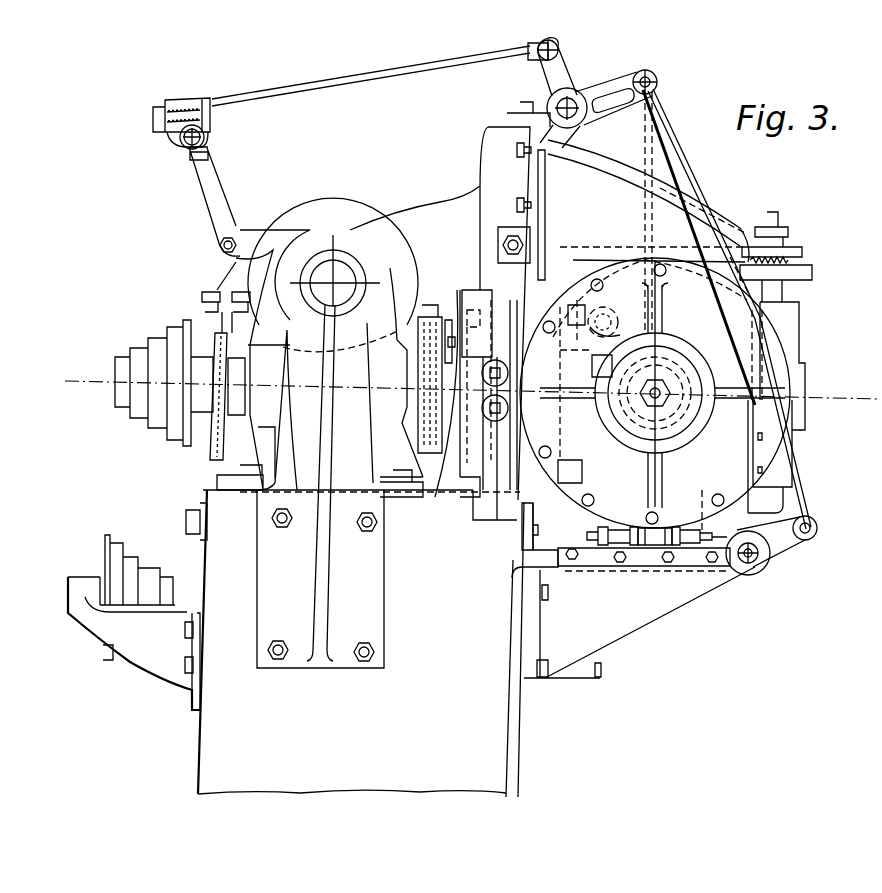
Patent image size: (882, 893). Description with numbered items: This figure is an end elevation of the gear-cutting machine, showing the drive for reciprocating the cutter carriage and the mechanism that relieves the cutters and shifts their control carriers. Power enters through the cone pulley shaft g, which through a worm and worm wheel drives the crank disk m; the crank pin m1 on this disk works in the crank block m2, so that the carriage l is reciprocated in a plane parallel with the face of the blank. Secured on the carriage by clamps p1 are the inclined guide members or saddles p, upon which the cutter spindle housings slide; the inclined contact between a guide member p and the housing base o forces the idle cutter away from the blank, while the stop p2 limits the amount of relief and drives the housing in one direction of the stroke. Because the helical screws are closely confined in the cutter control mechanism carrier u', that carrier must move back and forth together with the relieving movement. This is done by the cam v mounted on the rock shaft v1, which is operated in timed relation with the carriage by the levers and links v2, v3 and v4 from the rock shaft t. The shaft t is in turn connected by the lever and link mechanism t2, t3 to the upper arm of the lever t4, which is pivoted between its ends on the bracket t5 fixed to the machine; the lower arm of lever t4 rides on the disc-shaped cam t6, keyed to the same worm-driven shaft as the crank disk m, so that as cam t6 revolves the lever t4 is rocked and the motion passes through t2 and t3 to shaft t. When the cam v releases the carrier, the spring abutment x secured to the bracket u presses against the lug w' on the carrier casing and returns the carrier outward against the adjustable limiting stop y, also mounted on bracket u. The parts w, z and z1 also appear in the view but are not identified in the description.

The rock shaft t is at (580, 90).
The lever and link mechanism t2 is at (548, 68).
The lever and link mechanism t3 is at (362, 83).
The lever t4 is at (207, 203).
The bracket t5 is at (272, 247).
The cam t6 is at (205, 357).
The pulley shaft g is at (343, 277).
The crank disk m is at (415, 450).
The crank pin m1 is at (440, 490).
The crank block m2 is at (463, 293).
The carriage l is at (462, 497).
The inclined guide member p is at (518, 475).
The clamp p1 is at (577, 250).
The stop p2 is at (585, 438).
The base o is at (538, 490).
The bracket u is at (470, 551).
The cutter control mechanism carrier u' is at (666, 310).
The cam v is at (738, 577).
The rock shaft v1 is at (755, 575).
The lever v2 is at (784, 540).
The link v3 is at (798, 445).
The lever v4 is at (657, 73).
The shaft w is at (687, 572).
The lug w' is at (655, 564).
The spring abutment x is at (630, 537).
The adjustable limiting stop y is at (698, 523).
The pulley z is at (140, 407).
The bracket z1 is at (132, 567).